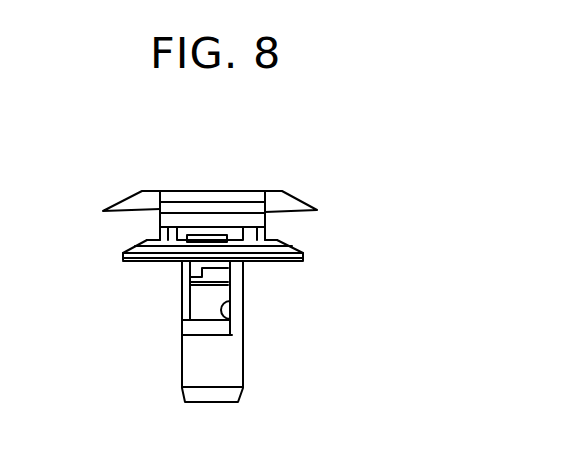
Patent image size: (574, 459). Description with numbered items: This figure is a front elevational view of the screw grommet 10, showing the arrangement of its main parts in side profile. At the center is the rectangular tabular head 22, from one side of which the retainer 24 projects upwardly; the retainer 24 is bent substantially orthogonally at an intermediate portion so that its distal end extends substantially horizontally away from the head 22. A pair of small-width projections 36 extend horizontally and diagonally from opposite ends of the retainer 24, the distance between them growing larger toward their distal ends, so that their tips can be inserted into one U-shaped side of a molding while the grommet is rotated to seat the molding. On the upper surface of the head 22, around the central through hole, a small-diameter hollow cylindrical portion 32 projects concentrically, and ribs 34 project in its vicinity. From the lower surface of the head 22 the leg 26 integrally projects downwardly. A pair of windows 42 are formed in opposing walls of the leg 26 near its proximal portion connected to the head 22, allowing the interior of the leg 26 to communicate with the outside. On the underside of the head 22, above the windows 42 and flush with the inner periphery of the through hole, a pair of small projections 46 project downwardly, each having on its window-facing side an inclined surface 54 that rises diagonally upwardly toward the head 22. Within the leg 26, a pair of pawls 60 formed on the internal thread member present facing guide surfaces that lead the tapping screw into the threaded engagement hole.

The screw grommet 10 is at (378, 193).
The head 22 is at (300, 247).
The retainer 24 is at (223, 190).
The leg 26 is at (230, 362).
The small-diameter hollow cylindrical portion 32 is at (233, 243).
The ribs 34 is at (150, 237).
The small-width projections 36 is at (133, 197).
The windows 42 is at (230, 322).
The small projections 46 is at (243, 267).
The inclined surface 54 is at (186, 276).
The pawls 60 is at (191, 303).